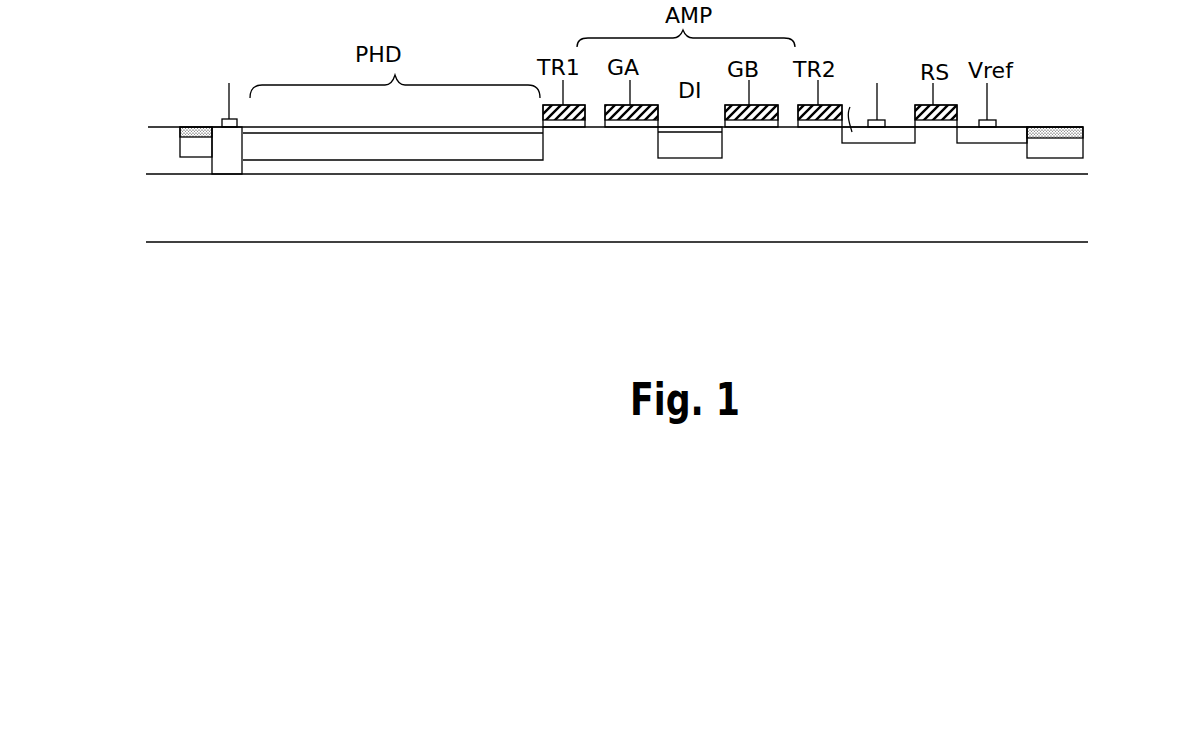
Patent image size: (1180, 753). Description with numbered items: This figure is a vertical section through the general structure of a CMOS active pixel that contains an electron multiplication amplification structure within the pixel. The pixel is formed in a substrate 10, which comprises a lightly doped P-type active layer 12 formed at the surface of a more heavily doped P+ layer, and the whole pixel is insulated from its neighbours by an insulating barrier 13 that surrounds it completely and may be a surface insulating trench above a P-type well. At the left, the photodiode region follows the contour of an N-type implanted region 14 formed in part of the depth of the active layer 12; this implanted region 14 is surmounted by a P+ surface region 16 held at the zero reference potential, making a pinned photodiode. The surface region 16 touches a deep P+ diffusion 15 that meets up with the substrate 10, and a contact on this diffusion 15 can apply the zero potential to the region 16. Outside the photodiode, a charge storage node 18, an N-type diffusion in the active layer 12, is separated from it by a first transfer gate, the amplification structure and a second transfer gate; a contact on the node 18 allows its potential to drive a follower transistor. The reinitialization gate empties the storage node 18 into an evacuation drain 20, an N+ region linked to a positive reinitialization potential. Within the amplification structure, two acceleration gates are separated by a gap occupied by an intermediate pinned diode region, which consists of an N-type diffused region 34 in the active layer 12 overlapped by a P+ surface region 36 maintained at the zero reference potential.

The substrate 10 is at (162, 228).
The active layer 12 is at (163, 150).
The insulating barrier 13 is at (179, 127).
The N-type photodiode region 14 is at (393, 144).
The deep diffusion 15 is at (217, 132).
The surface region 16 is at (403, 130).
The charge storage node 18 is at (898, 133).
The evacuation drain 20 is at (1008, 135).
The diffused region 34 is at (715, 158).
The surface region 36 is at (677, 132).